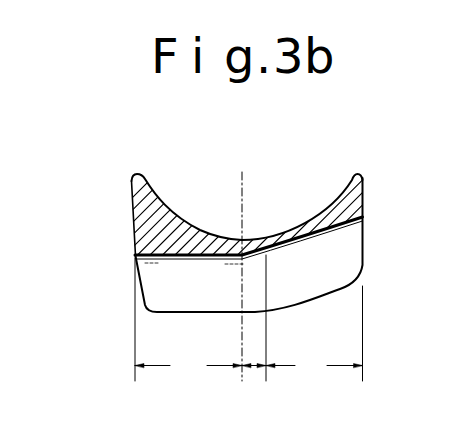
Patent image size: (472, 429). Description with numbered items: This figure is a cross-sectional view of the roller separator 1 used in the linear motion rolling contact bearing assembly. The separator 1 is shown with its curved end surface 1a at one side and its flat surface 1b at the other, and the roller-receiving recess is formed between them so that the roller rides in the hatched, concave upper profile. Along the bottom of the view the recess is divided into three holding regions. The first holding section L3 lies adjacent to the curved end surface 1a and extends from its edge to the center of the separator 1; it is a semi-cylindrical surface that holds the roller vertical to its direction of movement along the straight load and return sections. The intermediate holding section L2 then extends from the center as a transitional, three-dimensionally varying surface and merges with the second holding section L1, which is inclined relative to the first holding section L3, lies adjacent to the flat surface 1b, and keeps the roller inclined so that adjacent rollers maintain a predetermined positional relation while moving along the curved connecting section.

The roller separator 1 is at (247, 241).
The curved end surface 1a is at (132, 233).
The flat surface 1b is at (366, 264).
The second holding section L1 is at (314, 365).
The intermediate holding section L2 is at (253, 367).
The first holding section L3 is at (188, 366).